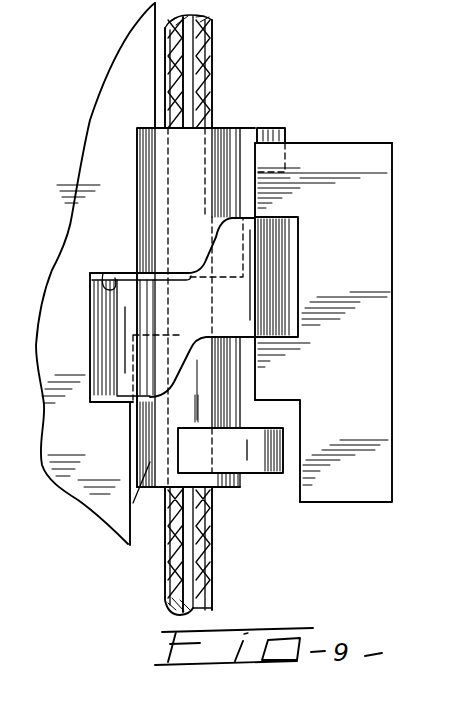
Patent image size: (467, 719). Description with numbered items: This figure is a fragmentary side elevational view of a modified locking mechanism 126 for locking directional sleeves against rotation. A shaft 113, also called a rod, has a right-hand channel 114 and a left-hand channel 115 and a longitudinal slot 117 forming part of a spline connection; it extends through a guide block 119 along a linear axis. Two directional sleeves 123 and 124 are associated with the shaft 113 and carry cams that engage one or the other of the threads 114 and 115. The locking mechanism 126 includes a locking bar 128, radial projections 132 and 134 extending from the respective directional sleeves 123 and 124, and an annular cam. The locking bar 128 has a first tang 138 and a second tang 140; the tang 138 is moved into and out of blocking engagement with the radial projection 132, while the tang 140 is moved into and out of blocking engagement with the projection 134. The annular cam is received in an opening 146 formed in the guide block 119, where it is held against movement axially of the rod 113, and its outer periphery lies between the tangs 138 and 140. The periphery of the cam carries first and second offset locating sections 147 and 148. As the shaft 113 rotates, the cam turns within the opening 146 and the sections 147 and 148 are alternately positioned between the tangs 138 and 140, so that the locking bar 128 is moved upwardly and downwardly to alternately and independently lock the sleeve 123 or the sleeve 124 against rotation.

The shaft 113 is at (207, 26).
The right-hand channel 114 is at (203, 90).
The left-hand channel 115 is at (168, 97).
The longitudinal slot 117 is at (188, 80).
The guide block 119 is at (99, 146).
The directional sleeve 123 is at (152, 163).
The directional sleeve 124 is at (118, 488).
The locking mechanism 126 is at (306, 123).
The locking bar 128 is at (368, 287).
The radial projection 132 is at (263, 132).
The radial projection 134 is at (267, 475).
The first tang 138 is at (315, 160).
The second tang 140 is at (282, 383).
The opening 146 is at (75, 237).
The first offset locating section 147 is at (113, 330).
The second offset locating section 148 is at (265, 279).